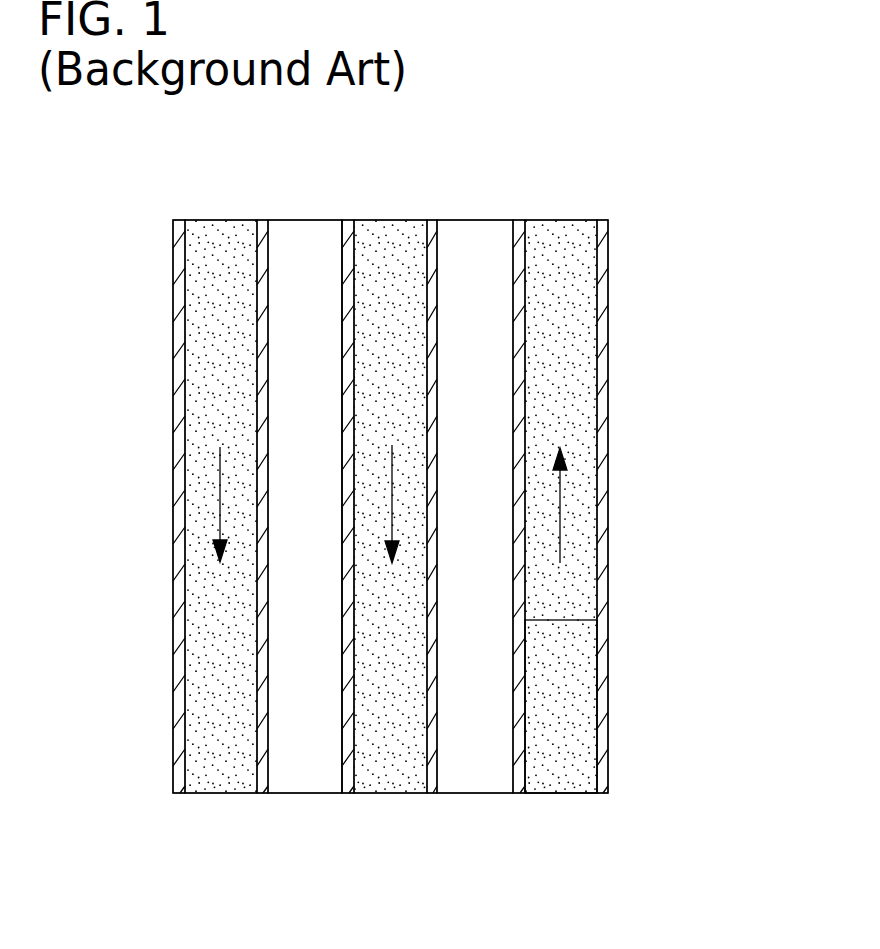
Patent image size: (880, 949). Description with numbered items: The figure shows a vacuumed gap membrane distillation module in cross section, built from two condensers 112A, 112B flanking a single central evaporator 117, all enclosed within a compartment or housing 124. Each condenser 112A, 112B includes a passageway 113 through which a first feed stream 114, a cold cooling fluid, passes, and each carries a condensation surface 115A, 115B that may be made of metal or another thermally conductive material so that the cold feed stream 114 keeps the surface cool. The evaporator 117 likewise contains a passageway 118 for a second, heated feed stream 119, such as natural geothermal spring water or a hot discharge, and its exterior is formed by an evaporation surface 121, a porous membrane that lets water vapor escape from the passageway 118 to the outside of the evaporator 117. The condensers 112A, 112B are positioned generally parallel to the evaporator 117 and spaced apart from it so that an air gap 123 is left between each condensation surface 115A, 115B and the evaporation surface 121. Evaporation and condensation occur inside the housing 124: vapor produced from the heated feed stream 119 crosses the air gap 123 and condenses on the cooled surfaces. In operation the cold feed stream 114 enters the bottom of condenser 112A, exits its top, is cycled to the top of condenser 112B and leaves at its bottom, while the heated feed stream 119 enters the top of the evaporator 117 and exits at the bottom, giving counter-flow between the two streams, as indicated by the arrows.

The condenser 112A is at (625, 486).
The condenser 112B is at (163, 473).
The passageway 113 is at (580, 717).
The first feed stream 114 is at (218, 773).
The condensation surface 115A is at (520, 228).
The condensation surface 115B is at (260, 228).
The evaporator 117 is at (328, 420).
The passageway 118 is at (398, 230).
The second feed stream 119 is at (382, 770).
The evaporation surface 121 is at (350, 227).
The air gap 123 is at (300, 773).
The housing 124 is at (565, 772).